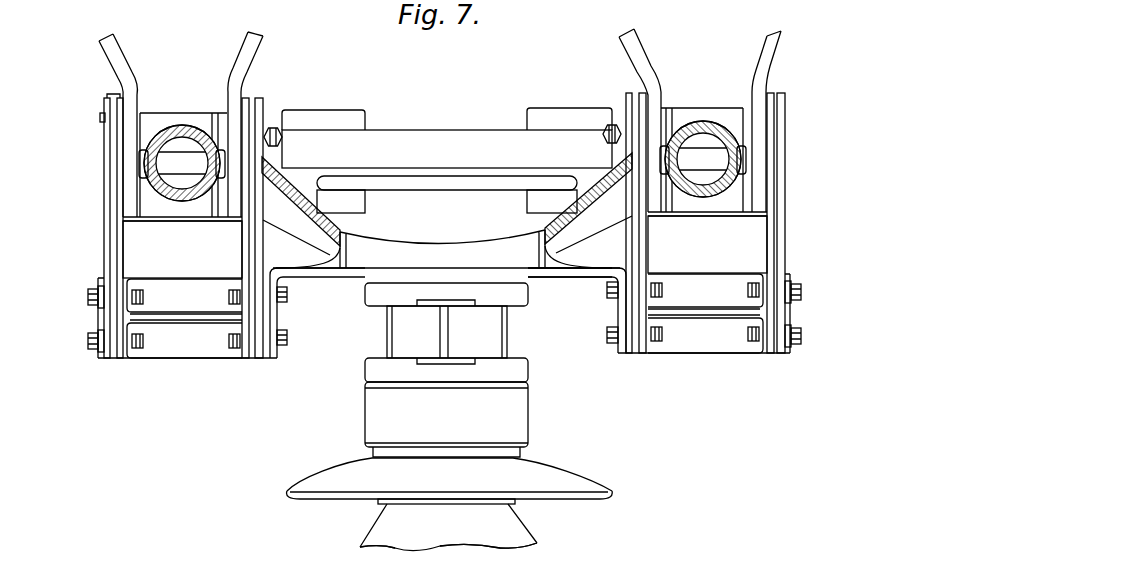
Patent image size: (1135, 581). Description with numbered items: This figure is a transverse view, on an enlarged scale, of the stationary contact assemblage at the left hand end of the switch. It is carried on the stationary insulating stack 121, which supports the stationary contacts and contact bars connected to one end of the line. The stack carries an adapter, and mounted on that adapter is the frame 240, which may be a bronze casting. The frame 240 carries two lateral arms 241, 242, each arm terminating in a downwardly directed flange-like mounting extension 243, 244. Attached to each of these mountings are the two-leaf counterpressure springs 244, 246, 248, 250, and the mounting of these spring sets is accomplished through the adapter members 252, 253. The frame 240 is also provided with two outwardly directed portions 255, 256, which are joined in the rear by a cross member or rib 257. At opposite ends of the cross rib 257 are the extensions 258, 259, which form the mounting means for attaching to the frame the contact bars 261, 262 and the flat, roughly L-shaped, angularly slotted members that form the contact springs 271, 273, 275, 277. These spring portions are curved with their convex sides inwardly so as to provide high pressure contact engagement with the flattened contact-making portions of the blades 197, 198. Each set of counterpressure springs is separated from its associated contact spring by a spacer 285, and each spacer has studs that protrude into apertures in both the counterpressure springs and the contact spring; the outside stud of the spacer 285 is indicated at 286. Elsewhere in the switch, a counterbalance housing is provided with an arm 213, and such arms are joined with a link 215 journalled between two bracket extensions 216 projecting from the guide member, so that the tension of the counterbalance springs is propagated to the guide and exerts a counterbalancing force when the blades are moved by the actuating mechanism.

The stationary insulating stack 121 is at (640, 430).
The blade 197 is at (174, 126).
The blade 198 is at (703, 122).
The arm 213 is at (382, 563).
The link 215 is at (462, 578).
The bracket extension 216 is at (518, 562).
The frame 240 is at (440, 243).
The lateral arm 241 is at (328, 284).
The lateral arm 242 is at (573, 276).
The flange-like mounting extension 243 is at (272, 360).
The flange-like mounting extension 244 is at (117, 242).
The counterpressure spring 246 is at (260, 250).
The counterpressure spring 248 is at (633, 237).
The counterpressure spring 250 is at (775, 230).
The adapter member 252 is at (168, 350).
The adapter member 253 is at (703, 344).
The outwardly directed portion 255 is at (295, 203).
The outwardly directed portion 256 is at (593, 203).
The cross member or rib 257 is at (430, 142).
The extension 258 is at (274, 113).
The extension 259 is at (612, 110).
The contact bar 261 is at (335, 115).
The contact bar 262 is at (552, 117).
The contact spring 271 is at (110, 54).
The contact spring 273 is at (247, 52).
The contact spring 275 is at (637, 55).
The contact spring 277 is at (770, 53).
The spacer 285 is at (117, 96).
The stud 286 is at (102, 120).